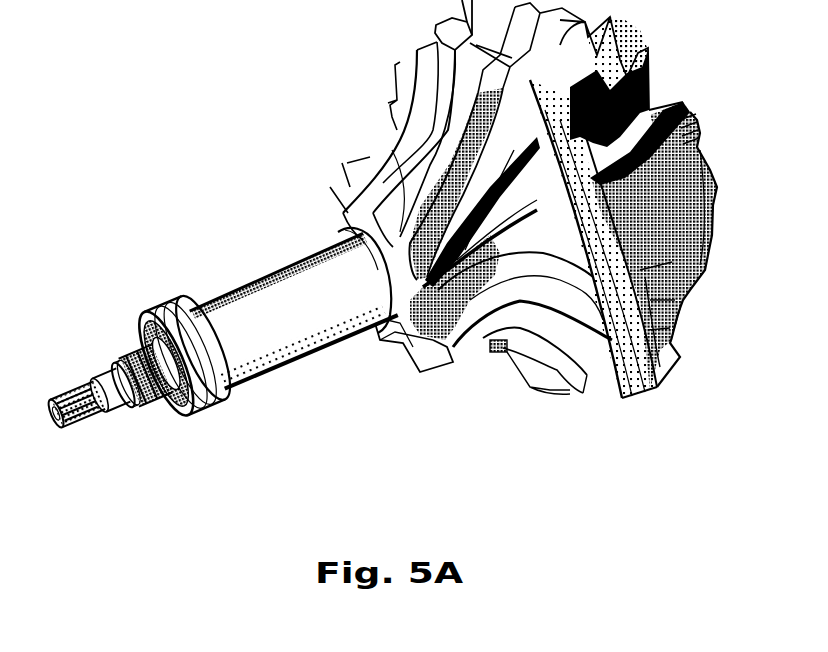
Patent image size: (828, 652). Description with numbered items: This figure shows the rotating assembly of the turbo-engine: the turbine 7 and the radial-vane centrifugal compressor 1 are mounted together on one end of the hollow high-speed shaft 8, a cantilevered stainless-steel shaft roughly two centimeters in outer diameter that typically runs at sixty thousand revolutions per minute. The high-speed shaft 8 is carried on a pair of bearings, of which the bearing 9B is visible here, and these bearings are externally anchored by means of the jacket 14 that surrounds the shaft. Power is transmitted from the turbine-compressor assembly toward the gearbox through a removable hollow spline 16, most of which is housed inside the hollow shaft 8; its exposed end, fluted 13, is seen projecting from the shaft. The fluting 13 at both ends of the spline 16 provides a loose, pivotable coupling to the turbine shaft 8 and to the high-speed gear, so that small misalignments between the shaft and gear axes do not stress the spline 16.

The centrifugal compressor 1 is at (574, 376).
The turbine 7 is at (678, 360).
The high-speed shaft 8 is at (288, 298).
The bearing 9B is at (192, 413).
The fluting 13 is at (72, 390).
The jacket 14 is at (218, 290).
The spline 16 is at (110, 367).